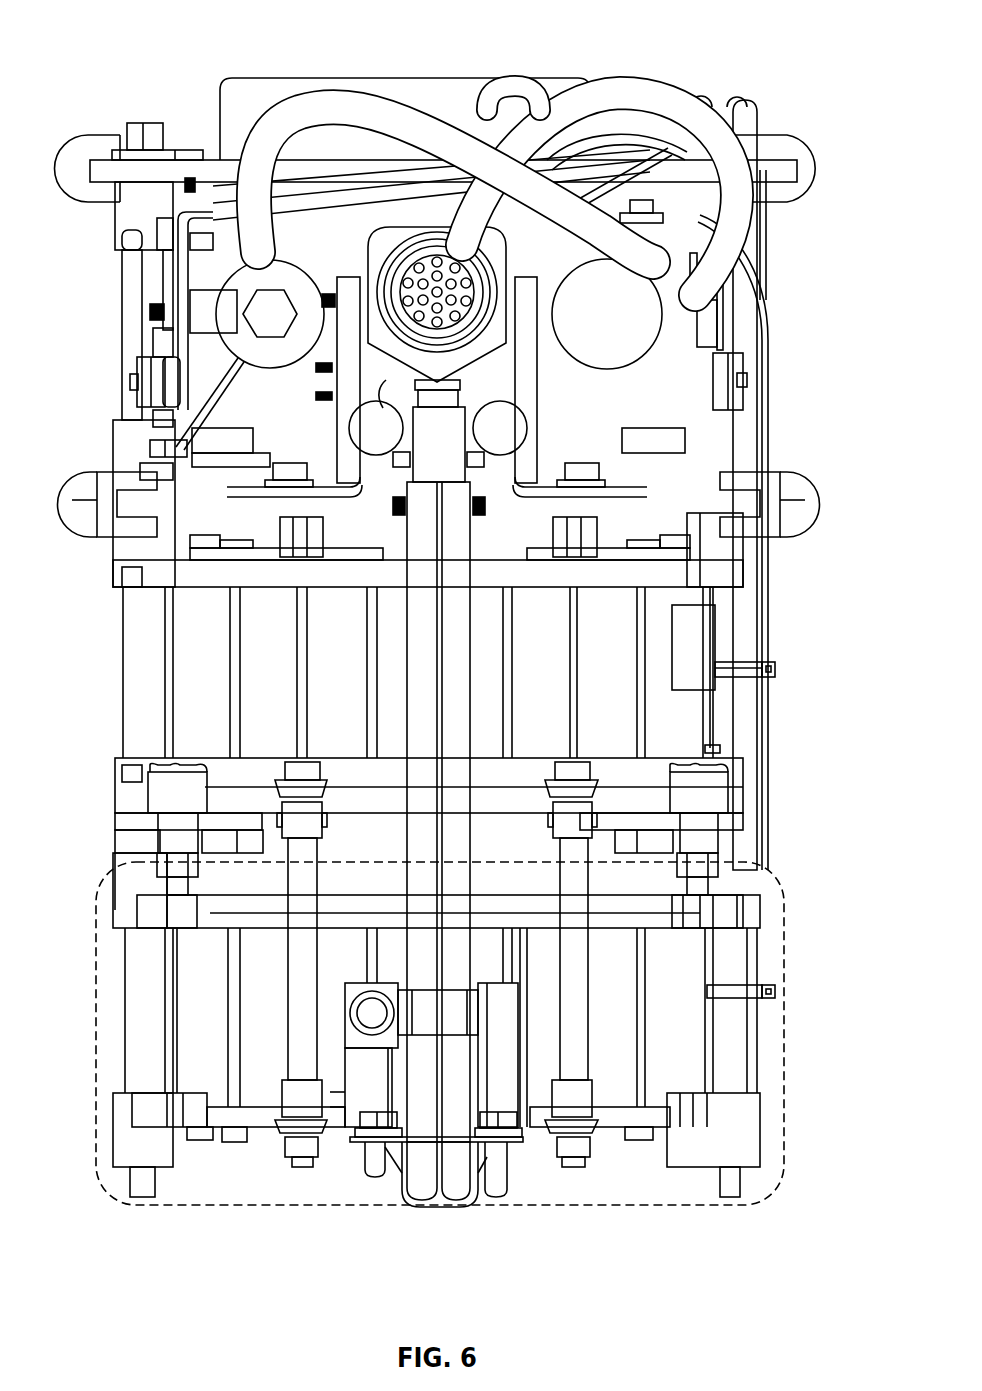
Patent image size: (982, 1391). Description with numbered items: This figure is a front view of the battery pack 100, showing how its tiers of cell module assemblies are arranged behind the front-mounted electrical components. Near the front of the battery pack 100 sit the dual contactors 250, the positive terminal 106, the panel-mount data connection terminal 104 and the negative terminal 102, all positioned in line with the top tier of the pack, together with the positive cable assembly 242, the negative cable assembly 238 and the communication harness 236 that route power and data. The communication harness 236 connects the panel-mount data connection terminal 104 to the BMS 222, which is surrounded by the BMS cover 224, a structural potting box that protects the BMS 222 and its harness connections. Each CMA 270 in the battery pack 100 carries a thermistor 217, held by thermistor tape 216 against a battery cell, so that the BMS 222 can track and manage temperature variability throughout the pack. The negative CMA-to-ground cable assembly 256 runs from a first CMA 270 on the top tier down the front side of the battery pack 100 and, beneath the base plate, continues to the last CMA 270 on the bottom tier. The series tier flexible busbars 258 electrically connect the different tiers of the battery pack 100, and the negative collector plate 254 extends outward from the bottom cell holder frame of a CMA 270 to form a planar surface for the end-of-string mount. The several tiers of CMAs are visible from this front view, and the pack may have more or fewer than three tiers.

The battery pack 100 is at (789, 46).
The negative terminal 102 is at (613, 323).
The panel-mount data connector 104 is at (397, 385).
The positive terminal 106 is at (250, 318).
The thermistor tape 216 is at (703, 668).
The thermistor 217 is at (718, 628).
The BMS 222 is at (236, 109).
The BMS cover 224 is at (252, 62).
The communication harness 236 is at (498, 108).
The negative cable assembly 238 is at (641, 113).
The positive cable assembly 242 is at (350, 107).
The battery pack dual contactors 250 is at (240, 395).
The negative collector plate 254 is at (226, 868).
The negative CMA-to-ground cable assembly 256 is at (440, 662).
The series tier flexible busbars 258 is at (296, 1025).
The CMA 270 is at (765, 1054).